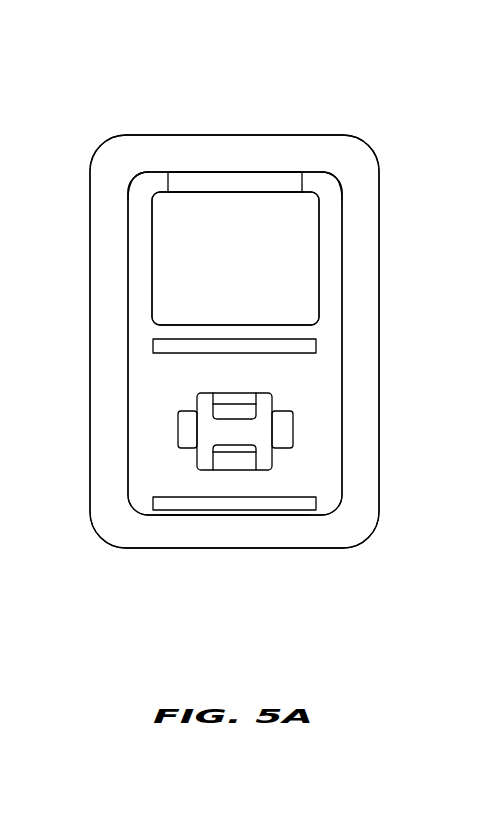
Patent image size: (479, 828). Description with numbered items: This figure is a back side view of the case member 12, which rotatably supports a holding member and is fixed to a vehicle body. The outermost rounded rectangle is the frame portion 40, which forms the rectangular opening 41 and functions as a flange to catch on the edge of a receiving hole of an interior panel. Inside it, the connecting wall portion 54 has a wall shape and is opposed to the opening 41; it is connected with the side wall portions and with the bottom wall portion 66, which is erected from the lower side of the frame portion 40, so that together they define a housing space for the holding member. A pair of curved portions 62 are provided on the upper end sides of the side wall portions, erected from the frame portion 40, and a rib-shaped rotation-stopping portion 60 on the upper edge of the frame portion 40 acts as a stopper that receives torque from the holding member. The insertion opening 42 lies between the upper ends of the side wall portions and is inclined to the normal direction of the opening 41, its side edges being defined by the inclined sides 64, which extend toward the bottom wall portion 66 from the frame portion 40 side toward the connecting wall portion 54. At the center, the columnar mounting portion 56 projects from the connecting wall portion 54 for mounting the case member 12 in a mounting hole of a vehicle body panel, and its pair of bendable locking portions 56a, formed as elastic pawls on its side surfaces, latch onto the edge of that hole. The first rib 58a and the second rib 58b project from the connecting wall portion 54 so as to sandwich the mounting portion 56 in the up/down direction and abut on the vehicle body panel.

The case member 12 is at (266, 582).
The frame portion 40 is at (287, 147).
The opening 41 is at (262, 221).
The insertion opening 42 is at (198, 280).
The connecting wall portion 54 is at (325, 408).
The mounting portion 56 is at (207, 462).
The locking portions 56a is at (177, 432).
The first rib 58a is at (293, 348).
The second rib 58b is at (283, 502).
The rotation-stopping portion 60 is at (203, 181).
The curved portions 62 is at (141, 178).
The inclined sides 64 is at (138, 253).
The bottom wall portion 66 is at (205, 517).